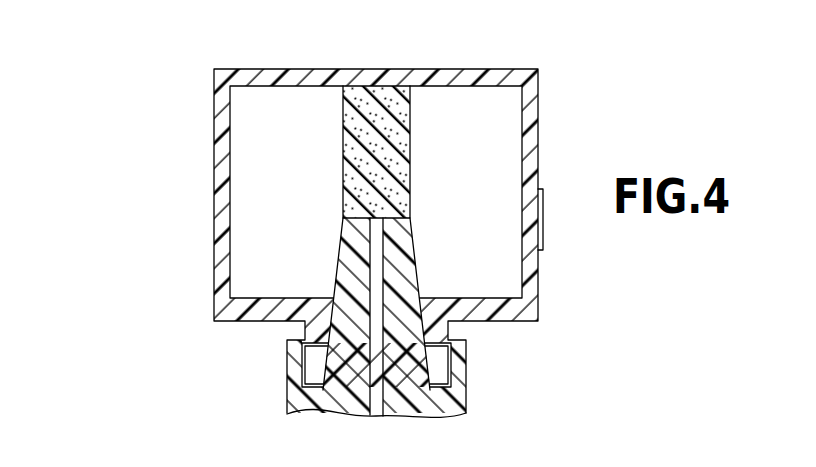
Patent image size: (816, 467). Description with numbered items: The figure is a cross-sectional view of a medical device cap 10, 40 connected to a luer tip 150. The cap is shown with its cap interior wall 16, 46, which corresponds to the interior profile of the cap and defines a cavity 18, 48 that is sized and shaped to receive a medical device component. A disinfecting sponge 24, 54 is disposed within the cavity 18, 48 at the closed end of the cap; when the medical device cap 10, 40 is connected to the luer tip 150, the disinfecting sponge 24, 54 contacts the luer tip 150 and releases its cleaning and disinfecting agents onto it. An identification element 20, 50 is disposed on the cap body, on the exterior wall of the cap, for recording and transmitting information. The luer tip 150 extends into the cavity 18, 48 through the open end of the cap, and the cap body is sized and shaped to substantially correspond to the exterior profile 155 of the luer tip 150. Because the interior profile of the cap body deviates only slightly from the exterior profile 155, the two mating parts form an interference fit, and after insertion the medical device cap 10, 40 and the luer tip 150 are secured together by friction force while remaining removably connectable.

The medical device cap 10 is at (356, 238).
The medical device cap 40 is at (356, 238).
The cap interior wall 16 is at (429, 243).
The cap interior wall 46 is at (526, 175).
The cavity 18 is at (319, 198).
The cavity 48 is at (280, 219).
The identification element 20 is at (596, 227).
The identification element 50 is at (542, 233).
The disinfecting sponge 24 is at (440, 115).
The disinfecting sponge 54 is at (410, 123).
The luer tip 150 is at (400, 258).
The exterior profile 155 is at (427, 372).